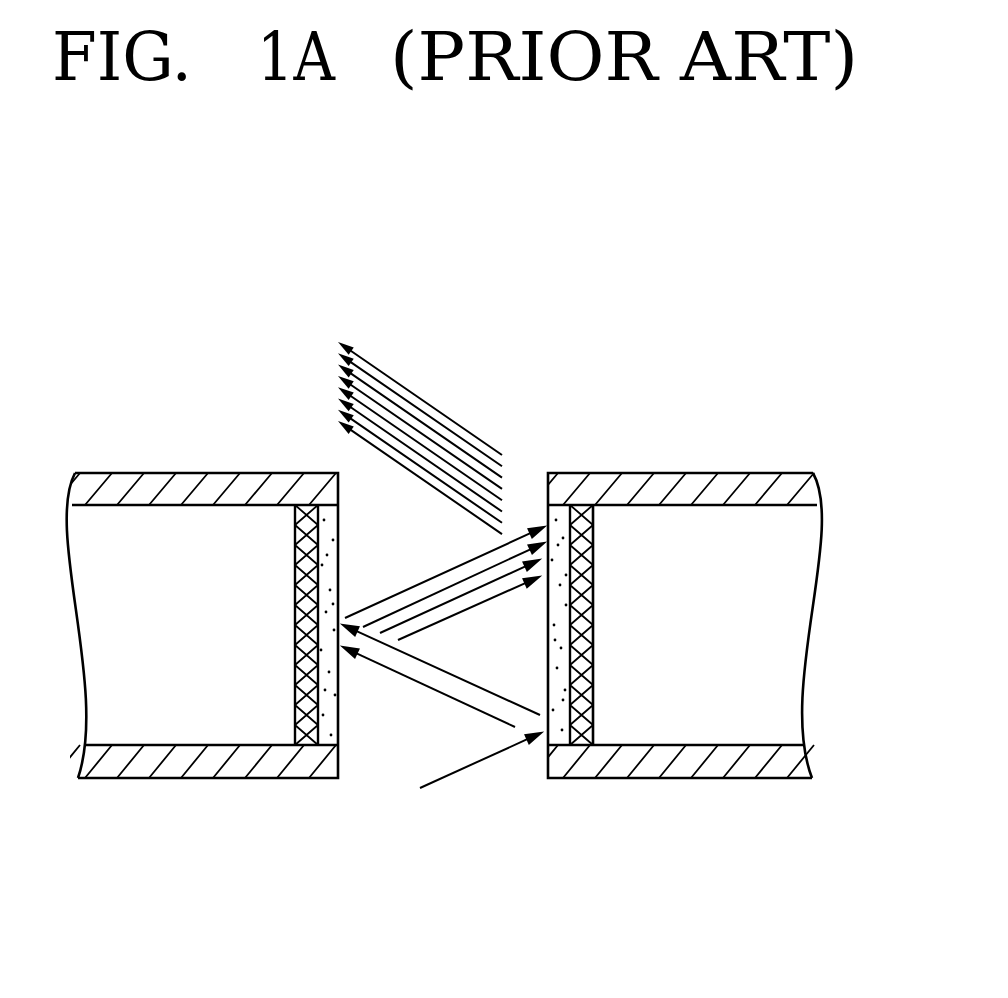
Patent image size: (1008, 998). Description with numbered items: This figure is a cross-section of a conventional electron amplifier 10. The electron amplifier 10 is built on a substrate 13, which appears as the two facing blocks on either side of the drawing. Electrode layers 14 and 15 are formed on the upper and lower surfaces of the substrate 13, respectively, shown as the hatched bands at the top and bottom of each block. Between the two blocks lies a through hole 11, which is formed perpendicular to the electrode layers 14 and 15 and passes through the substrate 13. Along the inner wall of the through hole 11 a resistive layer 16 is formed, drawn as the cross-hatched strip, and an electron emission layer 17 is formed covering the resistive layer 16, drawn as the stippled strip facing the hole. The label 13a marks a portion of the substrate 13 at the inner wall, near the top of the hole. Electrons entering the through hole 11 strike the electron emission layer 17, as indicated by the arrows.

The electron amplifier 10 is at (247, 360).
The through hole 11 is at (539, 760).
The substrate 13 is at (800, 657).
The spacer side surface 13a is at (597, 526).
The electrode layer 14 is at (192, 478).
The electrode layer 15 is at (192, 773).
The resistive layer 16 is at (297, 745).
The electron emission layer 17 is at (325, 745).